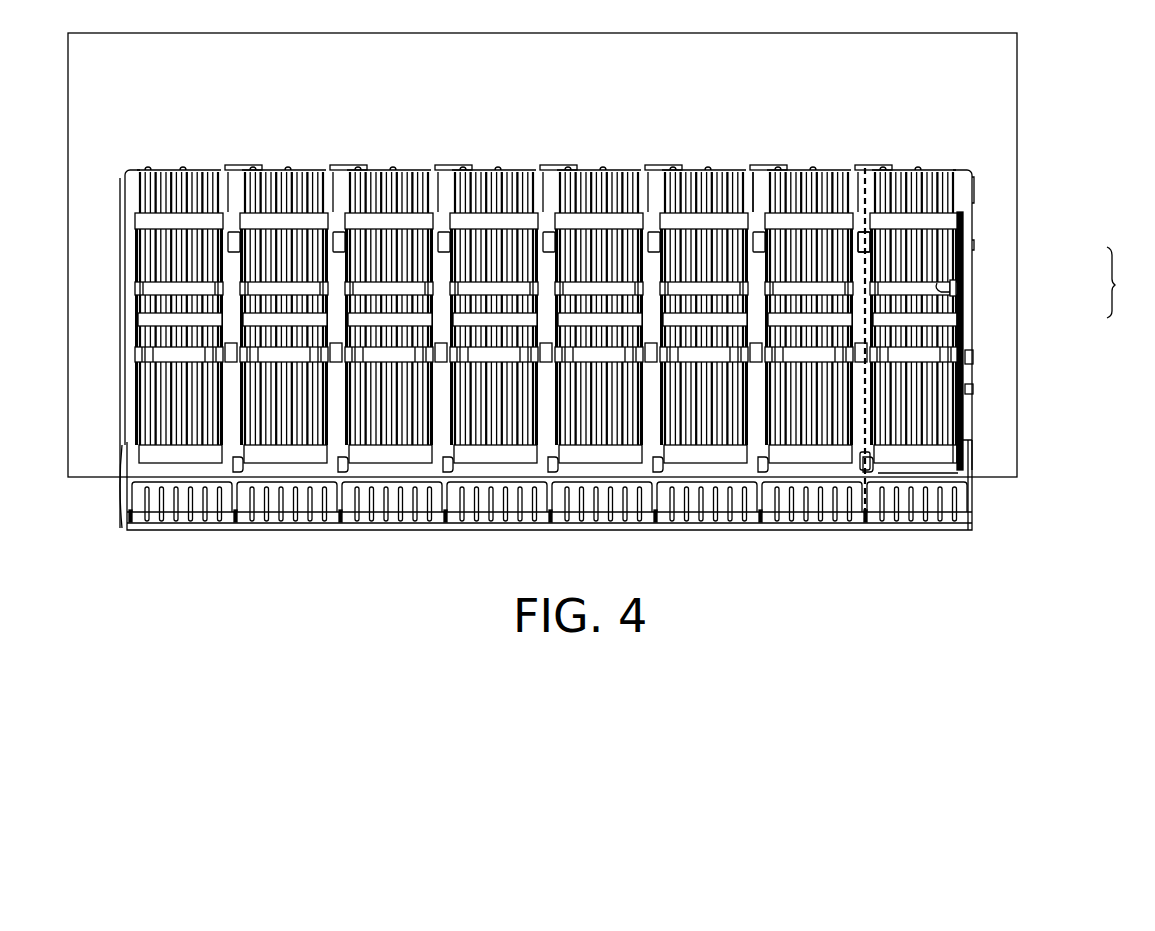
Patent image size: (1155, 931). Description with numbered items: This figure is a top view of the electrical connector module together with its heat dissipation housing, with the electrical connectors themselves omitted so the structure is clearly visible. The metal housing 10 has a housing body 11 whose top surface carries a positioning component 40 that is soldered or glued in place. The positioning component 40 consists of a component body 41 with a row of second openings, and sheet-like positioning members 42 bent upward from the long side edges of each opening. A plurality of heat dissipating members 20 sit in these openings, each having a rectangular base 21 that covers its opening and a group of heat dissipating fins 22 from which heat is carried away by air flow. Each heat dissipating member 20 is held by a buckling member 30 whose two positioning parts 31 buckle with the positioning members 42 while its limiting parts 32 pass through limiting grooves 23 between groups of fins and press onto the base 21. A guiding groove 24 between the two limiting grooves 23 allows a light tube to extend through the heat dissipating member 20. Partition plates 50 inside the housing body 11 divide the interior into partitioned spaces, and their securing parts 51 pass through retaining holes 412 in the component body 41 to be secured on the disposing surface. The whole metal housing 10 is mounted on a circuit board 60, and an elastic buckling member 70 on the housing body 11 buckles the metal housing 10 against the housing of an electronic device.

The metal housing 10 is at (973, 440).
The housing body 11 is at (905, 473).
The heat dissipating member 20 is at (960, 408).
The base 21 is at (957, 423).
The heat dissipating fins 22 is at (953, 453).
The limiting groove 23 is at (950, 288).
The guiding groove 24 is at (975, 360).
The buckling member 30 is at (1123, 282).
The positioning part 31 is at (960, 290).
The limiting part 32 is at (945, 285).
The positioning component 40 is at (801, 123).
The component body 41 is at (753, 185).
The positioning member 42 is at (760, 247).
The retaining hole 412 is at (870, 240).
The partition plate 50 is at (862, 487).
The securing part 51 is at (868, 210).
The circuit board 60 is at (993, 178).
The elastic buckling member 70 is at (953, 500).